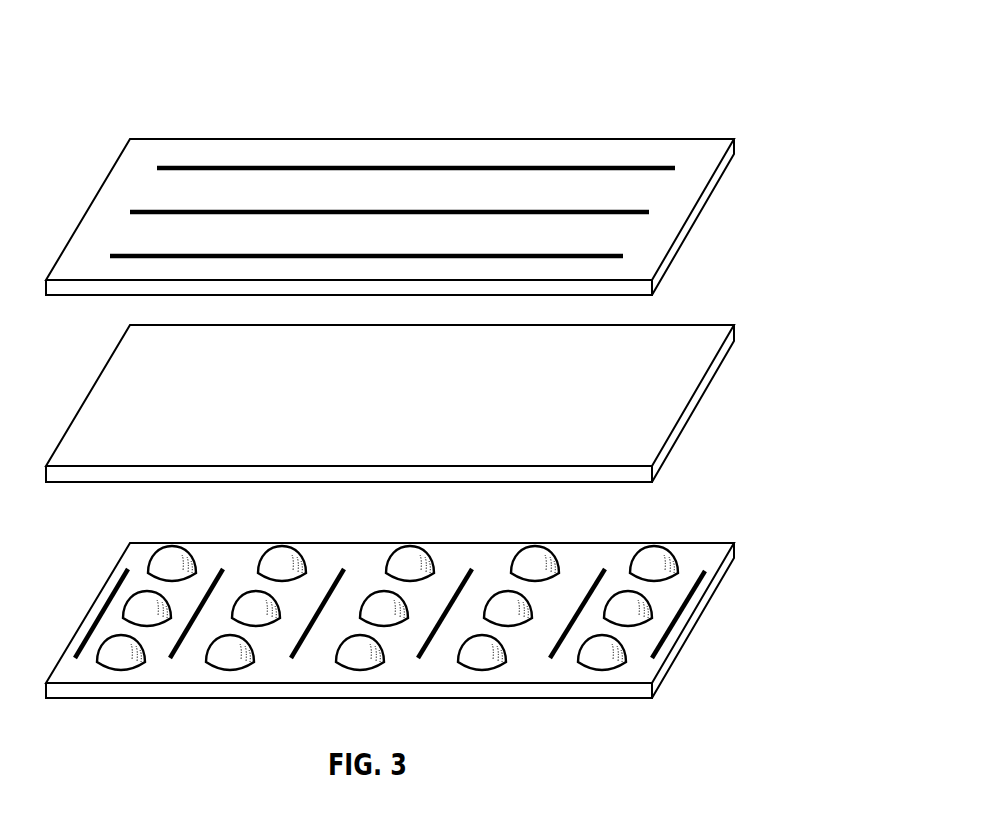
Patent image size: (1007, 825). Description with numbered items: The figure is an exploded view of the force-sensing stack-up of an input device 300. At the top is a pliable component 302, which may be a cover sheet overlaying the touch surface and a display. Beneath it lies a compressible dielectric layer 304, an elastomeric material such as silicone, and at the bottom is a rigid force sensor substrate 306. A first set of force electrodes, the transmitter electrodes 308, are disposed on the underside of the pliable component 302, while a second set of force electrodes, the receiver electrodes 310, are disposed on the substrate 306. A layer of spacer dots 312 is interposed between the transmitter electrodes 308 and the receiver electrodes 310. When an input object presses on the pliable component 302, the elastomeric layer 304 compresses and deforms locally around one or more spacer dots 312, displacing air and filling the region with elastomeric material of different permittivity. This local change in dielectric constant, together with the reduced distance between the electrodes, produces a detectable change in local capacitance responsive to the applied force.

The input device 300 is at (632, 39).
The pliable component 302 is at (735, 146).
The compressible dielectric layer 304 is at (735, 333).
The rigid force sensor substrate 306 is at (735, 550).
The transmitter electrodes 308 is at (595, 256).
The receiver electrodes 310 is at (687, 605).
The spacer dots 312 is at (653, 555).